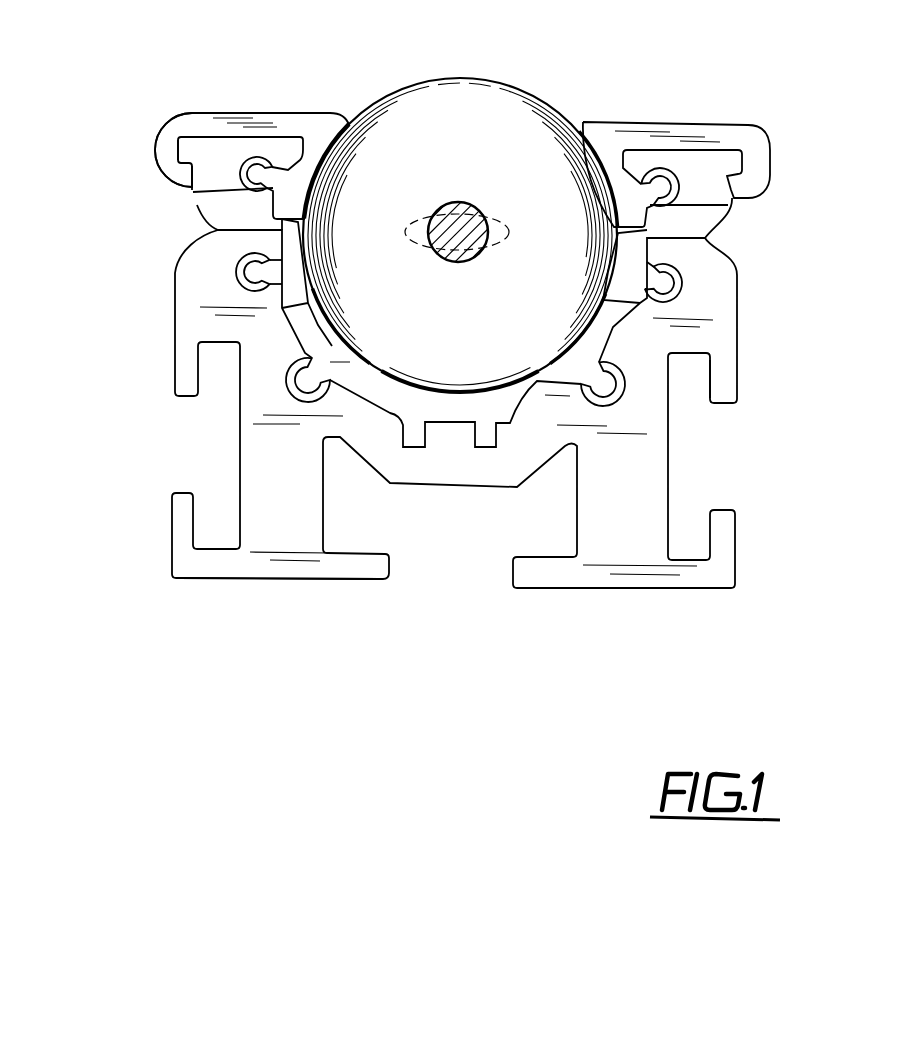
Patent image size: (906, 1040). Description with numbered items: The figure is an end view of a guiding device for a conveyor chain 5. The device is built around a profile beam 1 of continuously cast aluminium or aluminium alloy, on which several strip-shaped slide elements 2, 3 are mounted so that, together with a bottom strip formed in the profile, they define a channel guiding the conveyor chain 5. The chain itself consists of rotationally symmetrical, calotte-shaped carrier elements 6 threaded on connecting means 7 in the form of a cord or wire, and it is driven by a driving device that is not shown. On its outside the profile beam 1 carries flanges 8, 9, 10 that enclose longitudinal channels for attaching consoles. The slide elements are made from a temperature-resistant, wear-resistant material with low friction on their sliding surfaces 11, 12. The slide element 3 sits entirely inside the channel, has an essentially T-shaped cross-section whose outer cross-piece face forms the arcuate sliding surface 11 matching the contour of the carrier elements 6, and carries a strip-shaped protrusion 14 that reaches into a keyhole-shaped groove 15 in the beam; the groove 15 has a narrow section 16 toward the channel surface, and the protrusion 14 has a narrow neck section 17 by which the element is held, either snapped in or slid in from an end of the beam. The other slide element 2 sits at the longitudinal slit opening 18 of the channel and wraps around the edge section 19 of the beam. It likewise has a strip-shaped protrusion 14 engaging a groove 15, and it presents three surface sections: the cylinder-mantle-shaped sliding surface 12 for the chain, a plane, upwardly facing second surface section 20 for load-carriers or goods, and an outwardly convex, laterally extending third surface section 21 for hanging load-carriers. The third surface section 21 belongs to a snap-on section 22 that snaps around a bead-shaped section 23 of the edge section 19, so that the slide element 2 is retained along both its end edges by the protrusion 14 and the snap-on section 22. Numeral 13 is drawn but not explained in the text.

The profile beam 1 is at (703, 461).
The slide element 2 is at (303, 125).
The slide element 3 is at (292, 322).
The conveyor chain 5 is at (453, 66).
The carrier element 6 is at (476, 90).
The connecting means 7 is at (470, 212).
The flange 8 is at (724, 388).
The flange 9 is at (533, 588).
The flange 10 is at (176, 546).
The sliding surface 11 is at (612, 277).
The sliding surface 12 is at (360, 127).
The jaw 13 is at (280, 238).
The strip-shaped protrusion 14 is at (273, 193).
The groove 15 is at (235, 258).
The narrow section 16 is at (268, 279).
The narrow neck section 17 is at (247, 243).
The slit opening 18 is at (584, 121).
The edge section 19 is at (222, 145).
The second surface section 20 is at (252, 118).
The third surface section 21 is at (158, 130).
The snap-on section 22 is at (165, 172).
The bead-shaped section 23 is at (188, 147).